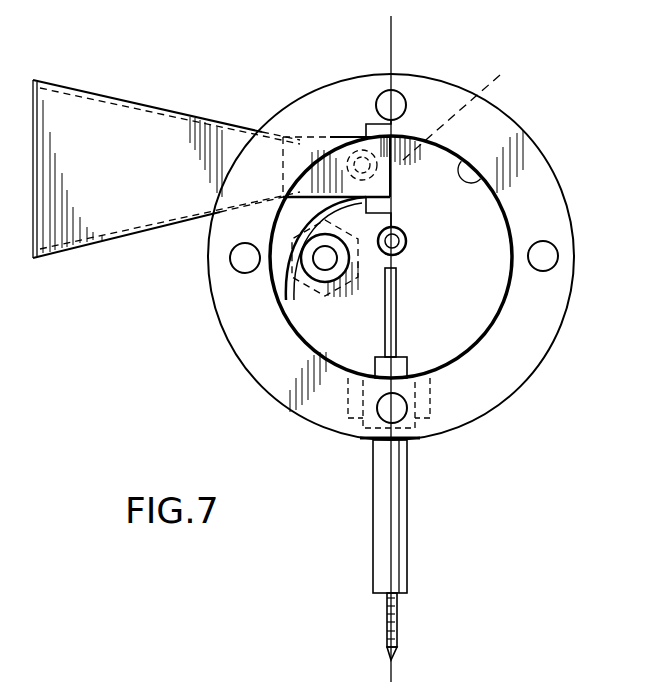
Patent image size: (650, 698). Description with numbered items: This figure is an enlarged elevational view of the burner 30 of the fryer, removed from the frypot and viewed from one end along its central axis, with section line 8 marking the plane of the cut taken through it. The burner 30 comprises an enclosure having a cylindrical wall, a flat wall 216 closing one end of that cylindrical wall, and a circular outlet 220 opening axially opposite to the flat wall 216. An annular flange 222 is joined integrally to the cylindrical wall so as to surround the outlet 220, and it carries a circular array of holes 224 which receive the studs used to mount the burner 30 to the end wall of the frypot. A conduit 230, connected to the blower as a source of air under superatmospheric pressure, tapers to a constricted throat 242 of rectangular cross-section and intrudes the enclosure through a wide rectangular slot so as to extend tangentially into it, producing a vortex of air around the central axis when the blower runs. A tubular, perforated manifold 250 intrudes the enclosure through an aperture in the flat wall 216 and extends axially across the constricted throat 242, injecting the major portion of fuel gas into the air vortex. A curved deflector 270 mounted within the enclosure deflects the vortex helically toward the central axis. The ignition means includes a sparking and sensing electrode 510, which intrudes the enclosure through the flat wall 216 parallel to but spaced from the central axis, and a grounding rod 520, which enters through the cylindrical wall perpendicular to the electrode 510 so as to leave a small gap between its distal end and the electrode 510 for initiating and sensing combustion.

The section line 8- 8 is at (403, 27).
The burner 30 is at (218, 364).
The flat wall 216 is at (471, 334).
The circular outlet 220 is at (462, 150).
The annular flange 222 is at (435, 86).
The holes 224 is at (380, 96).
The conduit 230 is at (154, 104).
The constricted throat 242 is at (320, 137).
The manifold 250 is at (474, 107).
The curved deflector 270 is at (287, 290).
The sparking and sensing electrode 510 is at (405, 236).
The grounding rod 520 is at (398, 289).